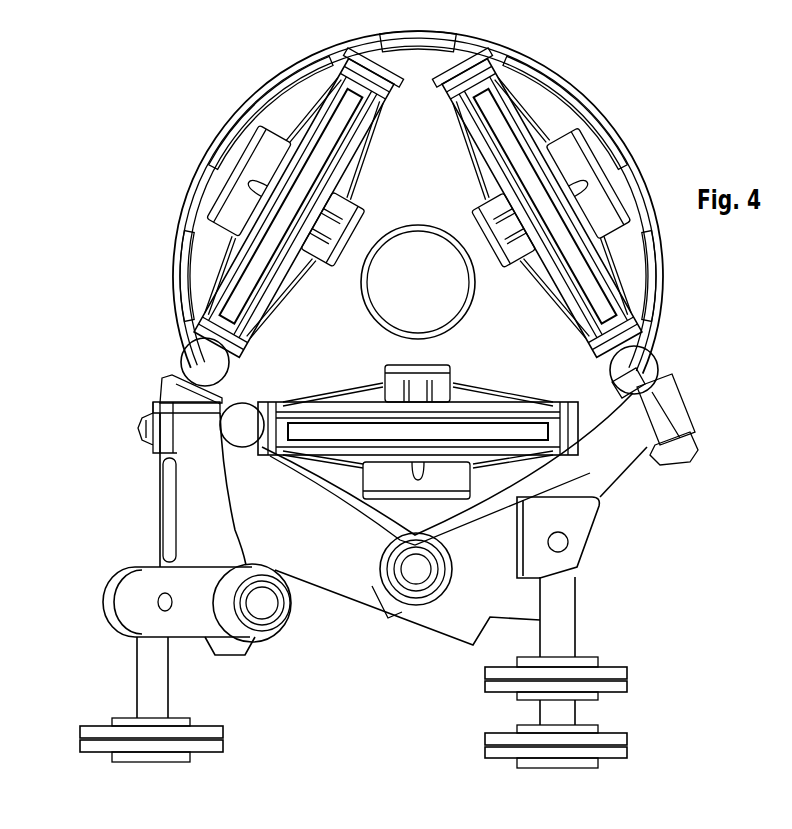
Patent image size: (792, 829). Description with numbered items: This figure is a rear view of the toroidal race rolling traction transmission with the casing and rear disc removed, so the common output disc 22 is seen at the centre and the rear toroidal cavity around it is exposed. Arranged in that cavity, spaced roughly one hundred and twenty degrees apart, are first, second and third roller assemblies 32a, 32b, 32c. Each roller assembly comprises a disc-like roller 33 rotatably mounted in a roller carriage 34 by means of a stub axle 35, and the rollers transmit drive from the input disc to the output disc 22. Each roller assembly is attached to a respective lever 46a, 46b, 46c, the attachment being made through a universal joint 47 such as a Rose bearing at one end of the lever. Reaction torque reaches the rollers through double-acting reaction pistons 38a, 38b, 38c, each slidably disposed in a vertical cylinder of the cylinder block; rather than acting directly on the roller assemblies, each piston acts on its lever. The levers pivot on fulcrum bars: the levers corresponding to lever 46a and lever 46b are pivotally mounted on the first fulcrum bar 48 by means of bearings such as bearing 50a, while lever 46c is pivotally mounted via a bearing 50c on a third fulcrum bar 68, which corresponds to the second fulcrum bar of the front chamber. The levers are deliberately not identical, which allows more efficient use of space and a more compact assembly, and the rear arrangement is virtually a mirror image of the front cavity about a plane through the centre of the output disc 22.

The output disc 22 is at (633, 160).
The first roller assembly 32a is at (300, 98).
The second roller assembly 32b is at (554, 108).
The third roller assembly 32c is at (524, 390).
The roller 33 is at (330, 146).
The roller carriage 34 is at (372, 118).
The stub axle 35 is at (243, 172).
The reaction piston 38a is at (620, 677).
The reaction piston 38b is at (620, 742).
The reaction piston 38c is at (220, 737).
The lever 46a is at (618, 487).
The lever 46b is at (335, 580).
The lever 46c is at (187, 528).
The universal joint 47 is at (193, 362).
The first fulcrum bar 48 is at (423, 583).
The bearing 50a is at (418, 577).
The bearing 50c is at (242, 657).
The third fulcrum bar 68 is at (273, 607).